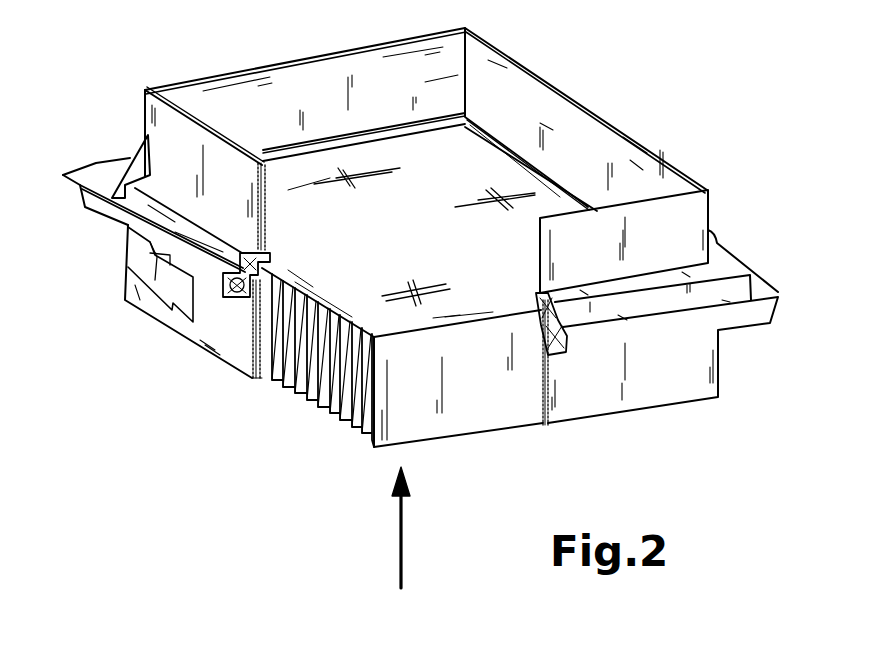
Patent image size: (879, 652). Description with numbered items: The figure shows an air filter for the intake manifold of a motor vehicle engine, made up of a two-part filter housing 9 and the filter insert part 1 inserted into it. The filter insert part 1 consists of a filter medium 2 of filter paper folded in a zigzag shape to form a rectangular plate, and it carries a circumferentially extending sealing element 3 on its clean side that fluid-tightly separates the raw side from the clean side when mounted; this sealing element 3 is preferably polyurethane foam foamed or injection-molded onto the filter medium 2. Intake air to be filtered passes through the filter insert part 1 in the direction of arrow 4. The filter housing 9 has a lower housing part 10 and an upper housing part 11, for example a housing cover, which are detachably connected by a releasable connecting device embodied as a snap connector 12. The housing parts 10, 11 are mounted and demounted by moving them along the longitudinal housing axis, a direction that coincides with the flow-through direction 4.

The air filter insert part 1 is at (414, 237).
The filter medium 2 is at (478, 385).
The sealing element 3 is at (487, 129).
The flow-through direction arrow 4 is at (400, 538).
The filter housing 9 is at (593, 108).
The lower housing part 10 is at (665, 388).
The upper housing part 11 is at (686, 229).
The snap connector 12 is at (143, 252).